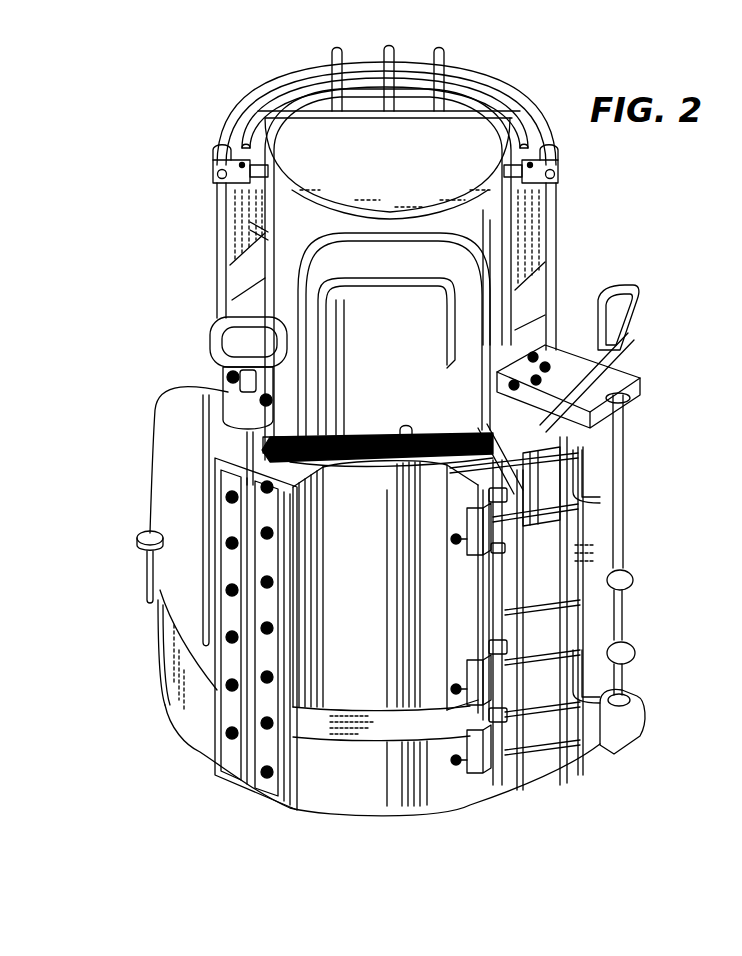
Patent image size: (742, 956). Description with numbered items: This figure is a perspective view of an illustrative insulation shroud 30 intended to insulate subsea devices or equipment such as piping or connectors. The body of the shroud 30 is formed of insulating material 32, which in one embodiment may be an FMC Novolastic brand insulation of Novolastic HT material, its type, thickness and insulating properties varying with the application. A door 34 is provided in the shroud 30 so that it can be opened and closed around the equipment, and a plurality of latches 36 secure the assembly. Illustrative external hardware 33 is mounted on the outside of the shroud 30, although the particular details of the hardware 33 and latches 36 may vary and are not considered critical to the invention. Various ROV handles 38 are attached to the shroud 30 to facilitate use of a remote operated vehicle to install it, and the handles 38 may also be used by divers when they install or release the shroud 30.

The insulation shroud 30 is at (200, 152).
The insulating material 32 is at (505, 208).
The external hardware 33 is at (240, 397).
The door 34 is at (396, 802).
The latches 36 is at (520, 766).
The ROV handles 38 is at (235, 318).